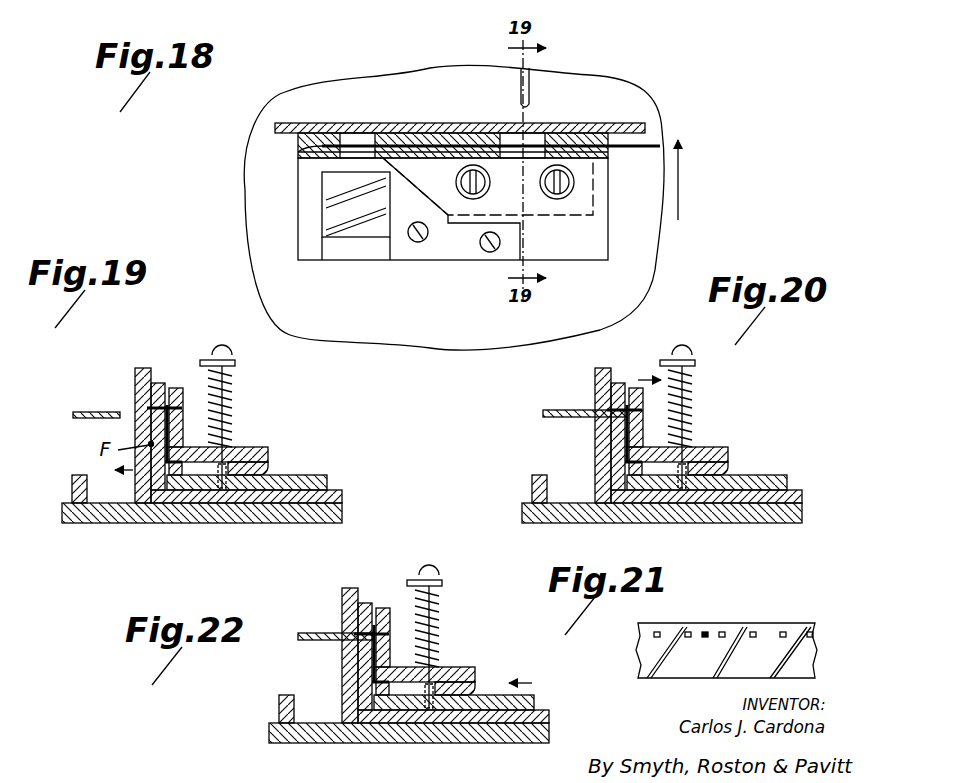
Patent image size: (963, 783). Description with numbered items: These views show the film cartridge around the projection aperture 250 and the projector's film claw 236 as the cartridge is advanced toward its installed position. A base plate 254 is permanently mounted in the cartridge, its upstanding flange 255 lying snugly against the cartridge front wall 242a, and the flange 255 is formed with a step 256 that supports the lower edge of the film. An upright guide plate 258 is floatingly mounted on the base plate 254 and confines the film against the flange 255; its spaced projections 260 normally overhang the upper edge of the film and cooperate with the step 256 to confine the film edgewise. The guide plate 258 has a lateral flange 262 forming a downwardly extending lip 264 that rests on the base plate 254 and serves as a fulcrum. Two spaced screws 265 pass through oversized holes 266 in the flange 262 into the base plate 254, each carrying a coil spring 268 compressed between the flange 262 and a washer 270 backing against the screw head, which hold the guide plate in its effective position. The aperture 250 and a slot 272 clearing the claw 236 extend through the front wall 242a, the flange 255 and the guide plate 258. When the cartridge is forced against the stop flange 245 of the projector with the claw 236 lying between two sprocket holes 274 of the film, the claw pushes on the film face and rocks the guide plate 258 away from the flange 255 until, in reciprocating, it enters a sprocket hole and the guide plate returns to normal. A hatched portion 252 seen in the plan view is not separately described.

In FIG. 18, the projection aperture 250 is at (338, 130).
In FIG. 18, the guide plate 242a is at (408, 130).
In FIG. 19, the guide plate 242a is at (135, 414).
In FIG. 20, the guide plate 242a is at (569, 432).
In FIG. 22, the guide plate 242a is at (326, 642).
In FIG. 18, the upstanding flange 255 is at (447, 132).
In FIG. 19, the upstanding flange 255 is at (182, 396).
In FIG. 20, the upstanding flange 255 is at (625, 409).
In FIG. 22, the upstanding flange 255 is at (355, 626).
In FIG. 18, the film claw 236 is at (533, 86).
In FIG. 19, the film claw 236 is at (91, 427).
In FIG. 20, the film claw 236 is at (565, 426).
In FIG. 22, the film claw 236 is at (331, 619).
In FIG. 21, the film claw 236 is at (706, 632).
In FIG. 18, the slot 272 is at (562, 126).
In FIG. 19, the slot 272 is at (129, 424).
In FIG. 20, the slot 272 is at (592, 435).
In FIG. 22, the slot 272 is at (331, 653).
In FIG. 18, the guide plate 258 is at (435, 160).
In FIG. 18, the block 252 is at (337, 207).
In FIG. 18, the screws 265 is at (483, 190).
In FIG. 19, the screws 265 is at (246, 347).
In FIG. 20, the screws 265 is at (720, 363).
In FIG. 22, the screws 265 is at (440, 555).
In FIG. 19, the spaced projections 260 is at (191, 387).
In FIG. 20, the spaced projections 260 is at (661, 384).
In FIG. 22, the spaced projections 260 is at (396, 595).
In FIG. 19, the lateral flange 262 is at (240, 435).
In FIG. 20, the lateral flange 262 is at (702, 444).
In FIG. 22, the lateral flange 262 is at (453, 653).
In FIG. 19, the downwardly extending lip 264 is at (284, 458).
In FIG. 20, the downwardly extending lip 264 is at (738, 462).
In FIG. 22, the downwardly extending lip 264 is at (489, 671).
In FIG. 19, the base plate 254 is at (276, 476).
In FIG. 20, the base plate 254 is at (731, 458).
In FIG. 22, the base plate 254 is at (454, 702).
In FIG. 19, the step 256 is at (140, 506).
In FIG. 19, the oversized holes 266 is at (202, 529).
In FIG. 20, the oversized holes 266 is at (662, 530).
In FIG. 22, the oversized holes 266 is at (409, 745).
In FIG. 19, the stop flange 245 is at (58, 476).
In FIG. 20, the stop flange 245 is at (548, 488).
In FIG. 22, the stop flange 245 is at (291, 707).
In FIG. 19, the coil spring 268 is at (253, 427).
In FIG. 20, the coil spring 268 is at (718, 427).
In FIG. 22, the coil spring 268 is at (455, 647).
In FIG. 19, the washer 270 is at (249, 364).
In FIG. 20, the washer 270 is at (714, 381).
In FIG. 22, the washer 270 is at (450, 570).
In FIG. 21, the sprocket holes 274 is at (807, 628).